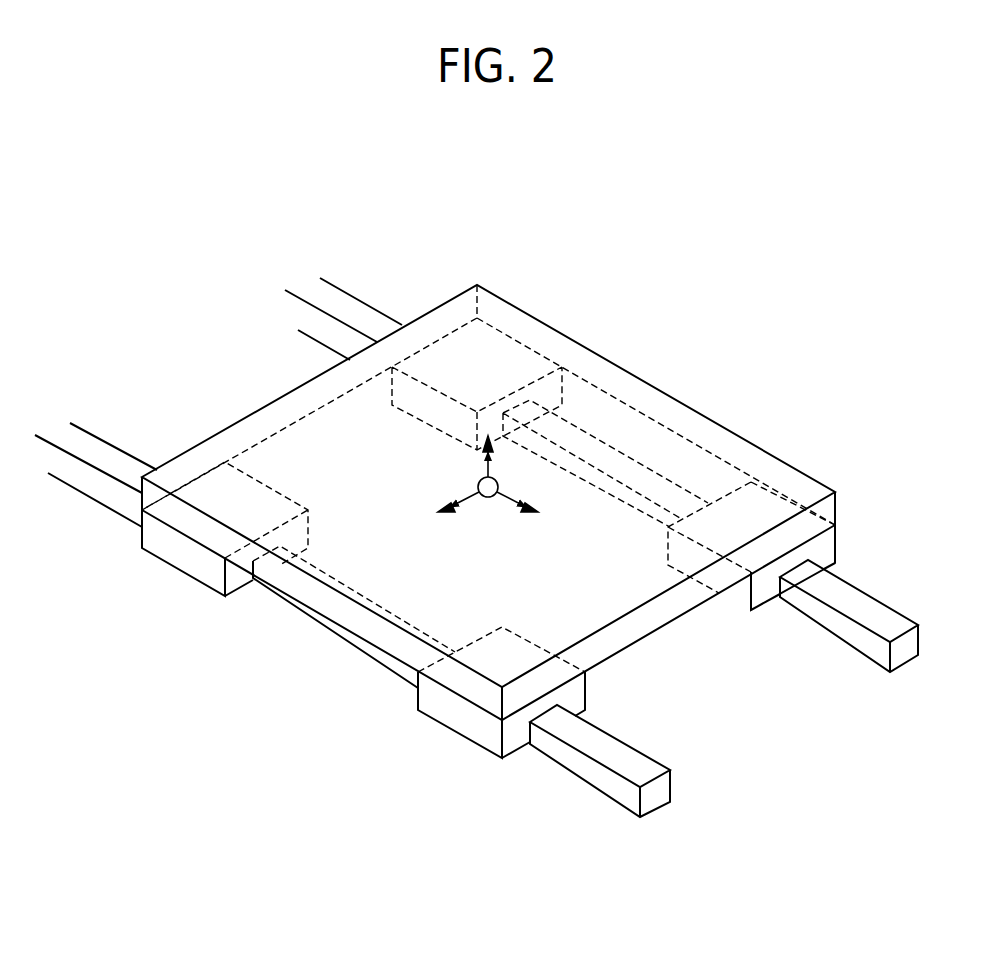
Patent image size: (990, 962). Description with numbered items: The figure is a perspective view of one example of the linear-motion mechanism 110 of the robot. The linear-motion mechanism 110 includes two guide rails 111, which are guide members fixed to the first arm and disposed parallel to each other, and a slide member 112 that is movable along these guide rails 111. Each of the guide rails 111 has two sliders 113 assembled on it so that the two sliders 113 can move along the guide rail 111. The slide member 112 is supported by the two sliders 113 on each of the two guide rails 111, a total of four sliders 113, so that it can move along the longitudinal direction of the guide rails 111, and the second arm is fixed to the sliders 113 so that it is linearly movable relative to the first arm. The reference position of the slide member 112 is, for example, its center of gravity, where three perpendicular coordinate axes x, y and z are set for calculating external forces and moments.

The linear-motion mechanism 110 is at (634, 224).
The guide rails 111 is at (598, 777).
The slide member 112 is at (292, 442).
The sliders 113 is at (548, 389).